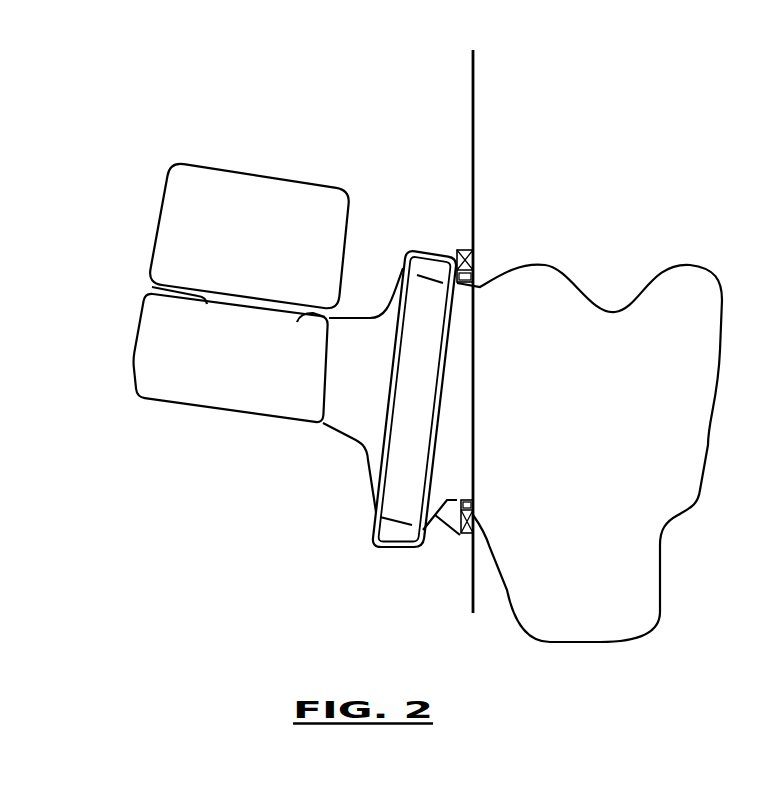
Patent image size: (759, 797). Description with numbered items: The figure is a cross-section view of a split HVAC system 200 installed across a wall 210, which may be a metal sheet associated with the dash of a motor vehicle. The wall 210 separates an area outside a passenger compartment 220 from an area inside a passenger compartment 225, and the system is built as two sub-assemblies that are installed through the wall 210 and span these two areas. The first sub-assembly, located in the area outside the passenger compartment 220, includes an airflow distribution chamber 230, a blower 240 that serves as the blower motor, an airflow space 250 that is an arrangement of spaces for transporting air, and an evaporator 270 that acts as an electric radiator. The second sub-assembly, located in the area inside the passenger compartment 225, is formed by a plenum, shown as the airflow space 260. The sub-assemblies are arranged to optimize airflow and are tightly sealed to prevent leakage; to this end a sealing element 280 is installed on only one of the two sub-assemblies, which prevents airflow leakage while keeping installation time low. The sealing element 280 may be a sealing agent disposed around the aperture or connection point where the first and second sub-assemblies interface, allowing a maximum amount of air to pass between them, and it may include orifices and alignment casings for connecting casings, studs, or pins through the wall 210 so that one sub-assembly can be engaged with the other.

The split HVAC system 200 is at (64, 54).
The wall 210 is at (472, 112).
The area outside a passenger compartment 220 is at (437, 197).
The area inside a passenger compartment 225 is at (571, 197).
The chamber 230 is at (270, 251).
The blower 240 is at (242, 372).
The airflow space 250 is at (382, 392).
The airflow space 260 is at (599, 439).
The evaporator 270 is at (407, 480).
The sealing element 280 is at (460, 250).